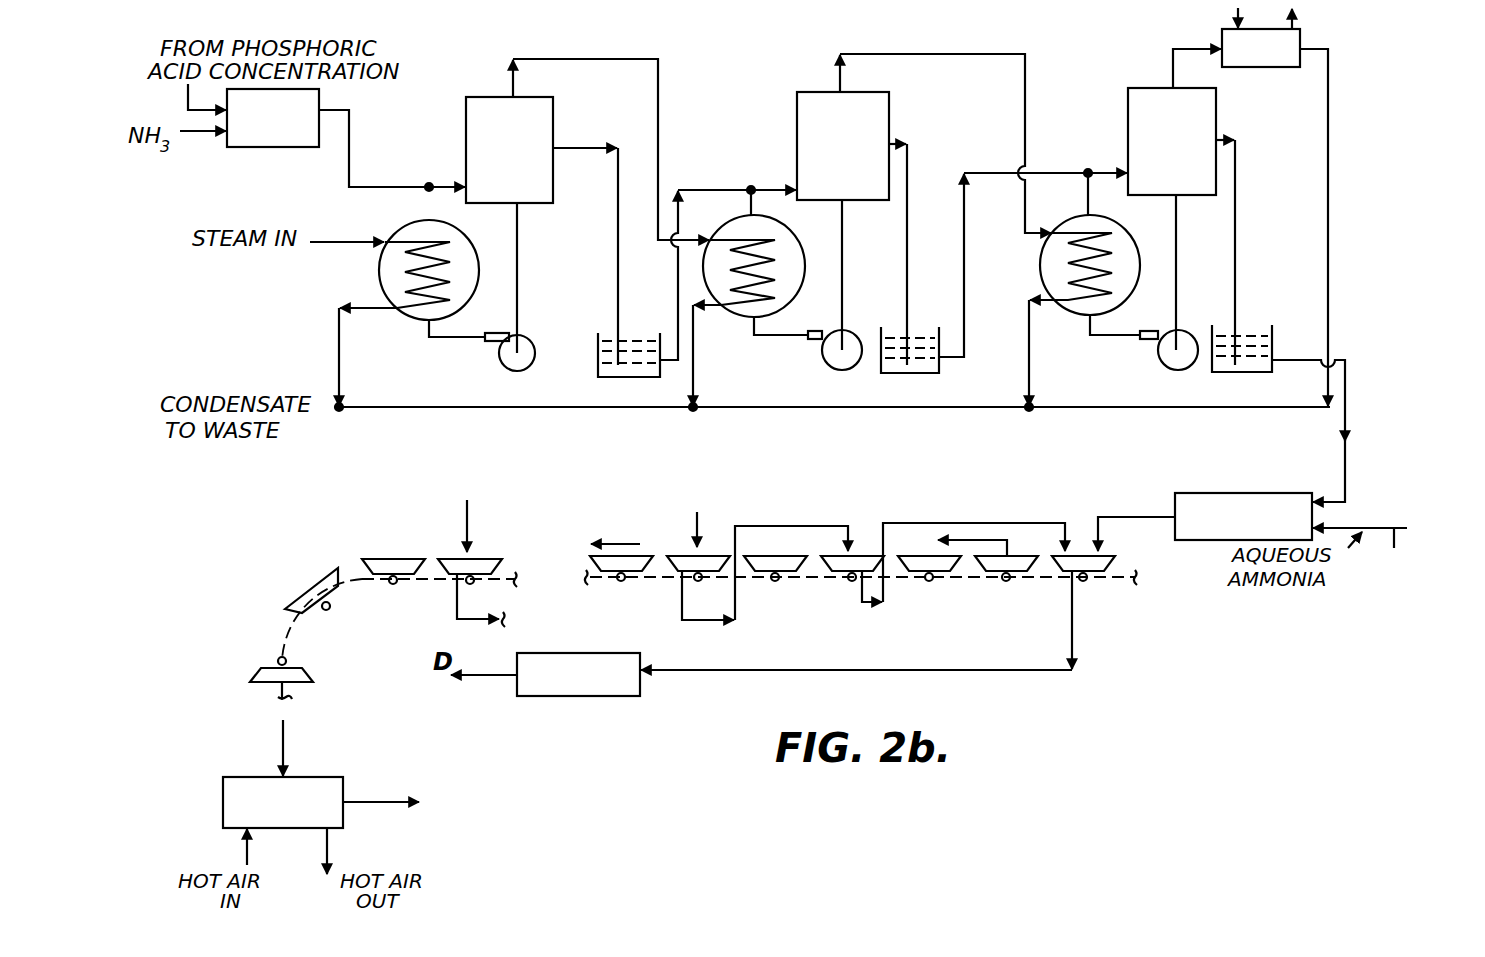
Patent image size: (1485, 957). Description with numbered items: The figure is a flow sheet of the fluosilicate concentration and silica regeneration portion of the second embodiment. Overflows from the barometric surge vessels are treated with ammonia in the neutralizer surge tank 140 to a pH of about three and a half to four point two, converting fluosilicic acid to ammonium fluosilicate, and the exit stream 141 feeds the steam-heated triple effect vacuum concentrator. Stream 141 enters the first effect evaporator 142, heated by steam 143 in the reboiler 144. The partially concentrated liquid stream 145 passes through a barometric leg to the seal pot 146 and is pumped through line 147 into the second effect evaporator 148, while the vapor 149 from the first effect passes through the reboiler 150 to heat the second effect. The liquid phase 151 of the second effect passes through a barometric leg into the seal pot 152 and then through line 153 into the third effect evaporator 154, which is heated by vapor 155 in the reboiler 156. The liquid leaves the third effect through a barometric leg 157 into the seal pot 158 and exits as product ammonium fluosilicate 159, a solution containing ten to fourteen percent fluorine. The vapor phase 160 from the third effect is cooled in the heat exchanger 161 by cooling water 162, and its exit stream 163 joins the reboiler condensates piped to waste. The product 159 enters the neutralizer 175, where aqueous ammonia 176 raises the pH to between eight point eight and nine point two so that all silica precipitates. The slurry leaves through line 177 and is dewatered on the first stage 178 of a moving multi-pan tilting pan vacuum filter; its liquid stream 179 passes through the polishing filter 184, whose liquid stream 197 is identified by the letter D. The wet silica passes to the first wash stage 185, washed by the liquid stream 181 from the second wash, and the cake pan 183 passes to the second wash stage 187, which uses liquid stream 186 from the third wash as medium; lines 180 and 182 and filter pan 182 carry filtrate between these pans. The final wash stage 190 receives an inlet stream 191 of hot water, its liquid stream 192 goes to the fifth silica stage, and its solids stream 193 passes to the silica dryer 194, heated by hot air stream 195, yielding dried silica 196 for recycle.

The neutralizer surge tank 140 is at (303, 135).
The exit stream 141 is at (350, 148).
The first effect evaporator 142 is at (553, 120).
The steam 143 is at (372, 250).
The reboiler 144 is at (470, 250).
The partially concentrated liquid stream 145 is at (615, 250).
The seal pot 146 is at (598, 370).
The line 147 is at (676, 293).
The second effect evaporator 148 is at (889, 123).
The vapor 149 is at (658, 118).
The reboiler 150 is at (798, 246).
The liquid phase / barometric leg 151 is at (908, 252).
The seal pot 152 is at (900, 374).
The line 153 is at (975, 230).
The third effect evaporator 154 is at (1128, 135).
The vapor 155 is at (1025, 100).
The reboiler 156 is at (1135, 245).
The barometric leg 157 is at (1237, 262).
The seal pot 158 is at (1262, 375).
The product ammonium fluosilicate 159 is at (1347, 470).
The vapor phase 160 is at (1173, 76).
The heat exchanger 161 is at (1280, 70).
The cooling water 162 is at (1236, 14).
The exit stream 163 is at (1329, 210).
The neutralizer 175 is at (1262, 492).
The aqueous ammonia 176 is at (1371, 552).
The line 177 is at (1093, 545).
The first stage 178 is at (1093, 578).
The liquid stream 179 is at (1070, 636).
The filtrate line 180 is at (862, 600).
The liquid stream 181 is at (682, 604).
The filter pan 182 is at (840, 555).
The solids-containing cake pan 183 is at (686, 556).
The polishing filter 184 is at (627, 697).
The first wash stage 185 is at (872, 530).
The liquid stream 186 is at (696, 512).
The wash stage 187 is at (636, 530).
The final wash stage 190 is at (455, 548).
The inlet stream 191 is at (468, 519).
The liquid stream 192 is at (455, 606).
The solids stream 193 is at (283, 742).
The silica dryer 194 is at (338, 778).
The hot air stream 195 is at (245, 852).
The dried silica 196 is at (388, 804).
The liquid stream 197 is at (503, 677).